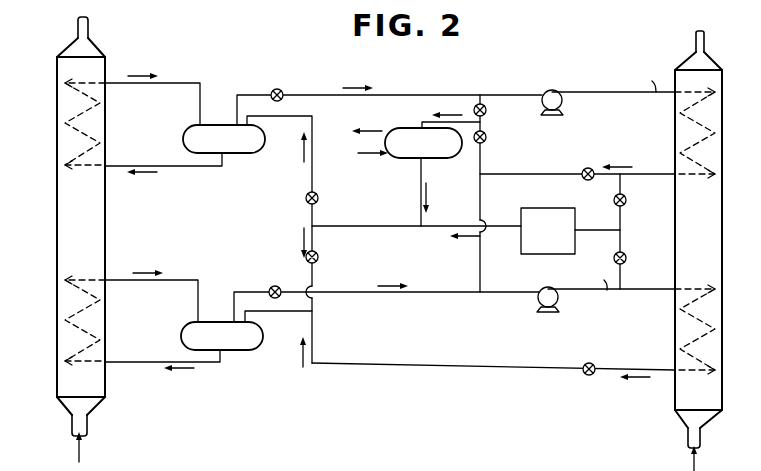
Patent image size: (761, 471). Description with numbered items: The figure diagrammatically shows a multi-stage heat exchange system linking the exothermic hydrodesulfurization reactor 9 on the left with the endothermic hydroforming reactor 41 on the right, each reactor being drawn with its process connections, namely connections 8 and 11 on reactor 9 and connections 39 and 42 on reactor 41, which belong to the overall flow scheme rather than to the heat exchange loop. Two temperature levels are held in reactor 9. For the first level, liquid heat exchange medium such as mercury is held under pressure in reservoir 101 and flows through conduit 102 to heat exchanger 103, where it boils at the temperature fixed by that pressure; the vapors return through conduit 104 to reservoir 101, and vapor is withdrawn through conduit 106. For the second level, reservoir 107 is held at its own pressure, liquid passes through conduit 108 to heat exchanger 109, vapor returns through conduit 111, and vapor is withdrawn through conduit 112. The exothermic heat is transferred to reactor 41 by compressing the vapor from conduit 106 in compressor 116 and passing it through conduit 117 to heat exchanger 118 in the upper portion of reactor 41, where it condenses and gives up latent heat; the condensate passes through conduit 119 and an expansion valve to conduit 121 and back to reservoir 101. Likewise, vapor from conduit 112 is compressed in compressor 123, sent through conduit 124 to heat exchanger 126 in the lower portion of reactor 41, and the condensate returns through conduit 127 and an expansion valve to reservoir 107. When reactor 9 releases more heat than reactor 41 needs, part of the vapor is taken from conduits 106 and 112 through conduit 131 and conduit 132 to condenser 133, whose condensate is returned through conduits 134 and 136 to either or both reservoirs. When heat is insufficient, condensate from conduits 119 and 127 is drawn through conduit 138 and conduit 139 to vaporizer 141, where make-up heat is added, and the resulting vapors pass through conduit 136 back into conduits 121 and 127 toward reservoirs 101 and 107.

The bottom inlet of first tower 8 is at (86, 426).
The hydrodesulfurization reactor 9 is at (60, 373).
The top outlet of first tower 11 is at (78, 26).
The bottom inlet of second tower 39 is at (688, 438).
The hydroforming reactor 41 is at (718, 393).
The top outlet of second tower 42 is at (705, 41).
The reservoir 101 is at (192, 128).
The conduit 102 is at (220, 168).
The heat exchanger 103 is at (95, 108).
The conduit 104 is at (195, 83).
The conduit 106 is at (240, 94).
The reservoir 107 is at (190, 326).
The conduit 108 is at (150, 365).
The heat exchanger 109 is at (100, 325).
The conduit 111 is at (170, 279).
The conduit 112 is at (243, 290).
The compressor 116 is at (551, 90).
The conduit 117 is at (585, 92).
The heat exchanger 118 is at (682, 118).
The conduit 119 is at (660, 174).
The conduit 121 is at (312, 188).
The compressor 123 is at (546, 288).
The conduit 124 is at (660, 292).
The heat exchanger 126 is at (690, 322).
The conduit 127 is at (312, 360).
The conduit 131 is at (491, 124).
The conduit 132 is at (430, 128).
The condenser 133 is at (395, 135).
The conduit 134 is at (421, 206).
The conduit 136 is at (474, 227).
The conduit 138 is at (622, 246).
The conduit 139 is at (608, 230).
The vaporizer 141 is at (562, 210).